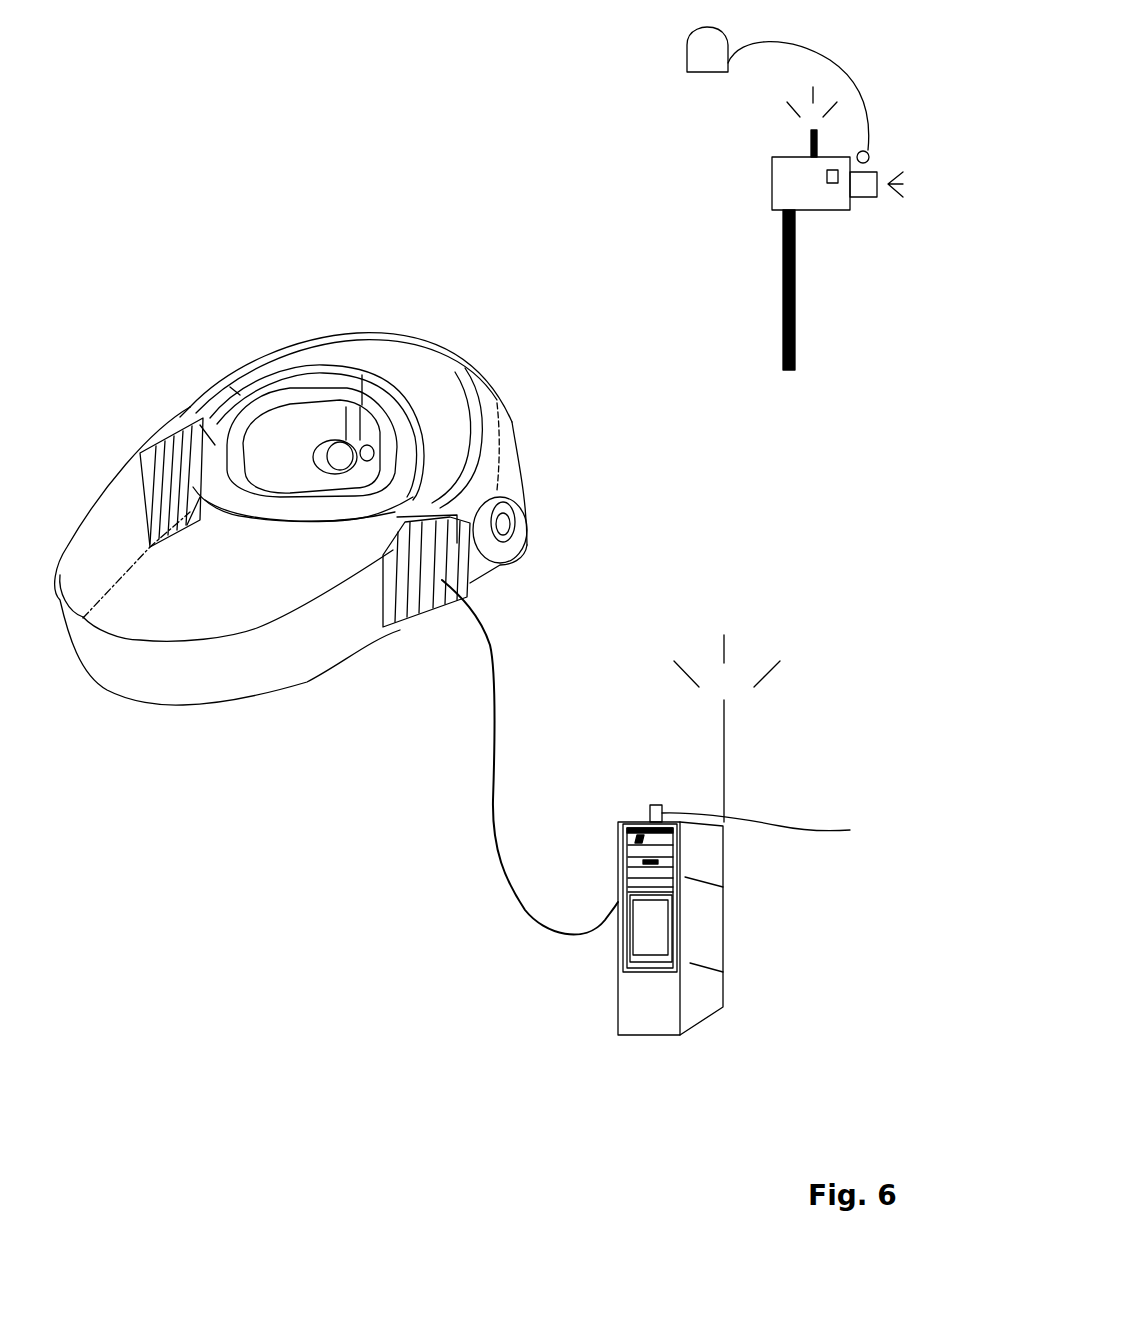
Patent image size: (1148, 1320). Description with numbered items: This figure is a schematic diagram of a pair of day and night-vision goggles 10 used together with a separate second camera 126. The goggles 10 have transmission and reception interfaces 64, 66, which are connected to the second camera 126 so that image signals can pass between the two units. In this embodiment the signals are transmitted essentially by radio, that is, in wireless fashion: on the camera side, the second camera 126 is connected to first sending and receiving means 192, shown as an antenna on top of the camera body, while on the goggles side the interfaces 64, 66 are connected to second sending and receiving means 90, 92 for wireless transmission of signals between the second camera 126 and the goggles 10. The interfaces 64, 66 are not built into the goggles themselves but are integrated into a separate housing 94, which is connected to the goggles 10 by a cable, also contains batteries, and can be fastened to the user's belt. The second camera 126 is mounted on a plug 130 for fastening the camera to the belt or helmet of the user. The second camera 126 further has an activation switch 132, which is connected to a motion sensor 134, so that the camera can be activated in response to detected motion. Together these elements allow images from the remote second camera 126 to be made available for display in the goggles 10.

The day and night-vision goggles 10 is at (357, 334).
The transmission interface 64 is at (700, 993).
The reception interface 66 is at (697, 927).
The second sending and receiving means 90 is at (697, 850).
The second sending and receiving means 92 is at (725, 758).
The separate housing 94 is at (617, 1030).
The second camera 126 is at (770, 218).
The plug 130 is at (783, 342).
The activation switch 132 is at (833, 168).
The motion sensor 134 is at (712, 72).
The first sending and receiving means 192 is at (811, 145).